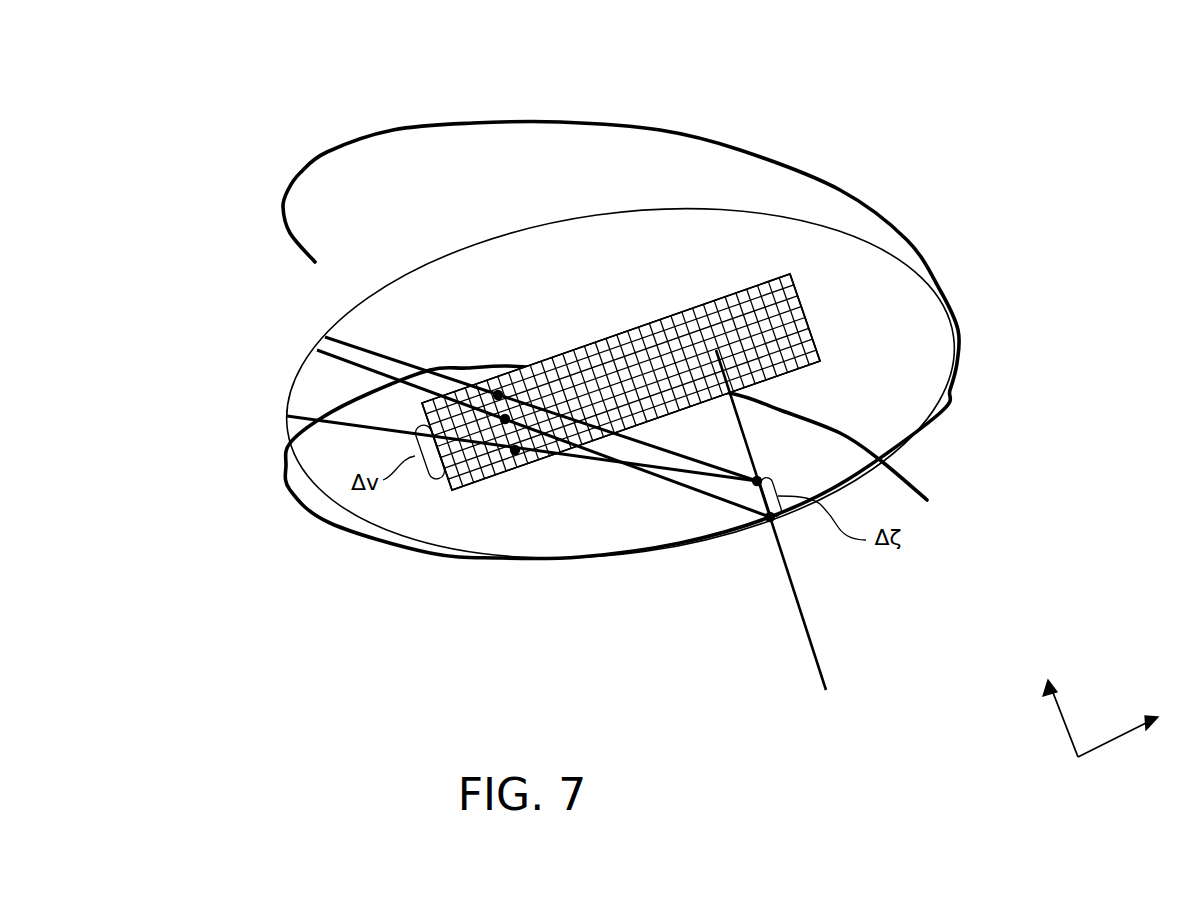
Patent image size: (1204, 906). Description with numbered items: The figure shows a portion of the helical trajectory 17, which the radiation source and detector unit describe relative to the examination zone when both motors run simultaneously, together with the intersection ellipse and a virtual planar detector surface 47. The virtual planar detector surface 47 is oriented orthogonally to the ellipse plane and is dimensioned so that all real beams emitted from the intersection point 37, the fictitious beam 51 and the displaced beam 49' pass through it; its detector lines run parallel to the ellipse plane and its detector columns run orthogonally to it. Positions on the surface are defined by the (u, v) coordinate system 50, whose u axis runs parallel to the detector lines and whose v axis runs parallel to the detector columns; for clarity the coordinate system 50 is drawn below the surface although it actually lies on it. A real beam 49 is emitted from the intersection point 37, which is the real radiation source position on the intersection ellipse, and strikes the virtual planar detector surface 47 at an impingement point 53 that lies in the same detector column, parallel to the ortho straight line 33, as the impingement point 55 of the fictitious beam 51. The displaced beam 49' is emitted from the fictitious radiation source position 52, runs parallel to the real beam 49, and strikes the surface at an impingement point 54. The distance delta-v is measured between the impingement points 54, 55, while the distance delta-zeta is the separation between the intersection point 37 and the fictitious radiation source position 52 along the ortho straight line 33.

The helical trajectory 17 is at (667, 126).
The virtual planar detector surface 47 is at (806, 314).
The ortho straight line 33 is at (820, 667).
The real beam 49 is at (543, 444).
The displaced beam 49' is at (494, 400).
The fictitious beam 51 is at (288, 436).
The fictitious radiation source position 52 is at (754, 486).
The intersection point 37 is at (768, 523).
The impingement point of the real beam 53 is at (507, 414).
The impingement point of the displaced beam 54 is at (498, 390).
The impingement point of the fictitious beam 55 is at (515, 456).
The (u, v) coordinate system 50 is at (1117, 739).